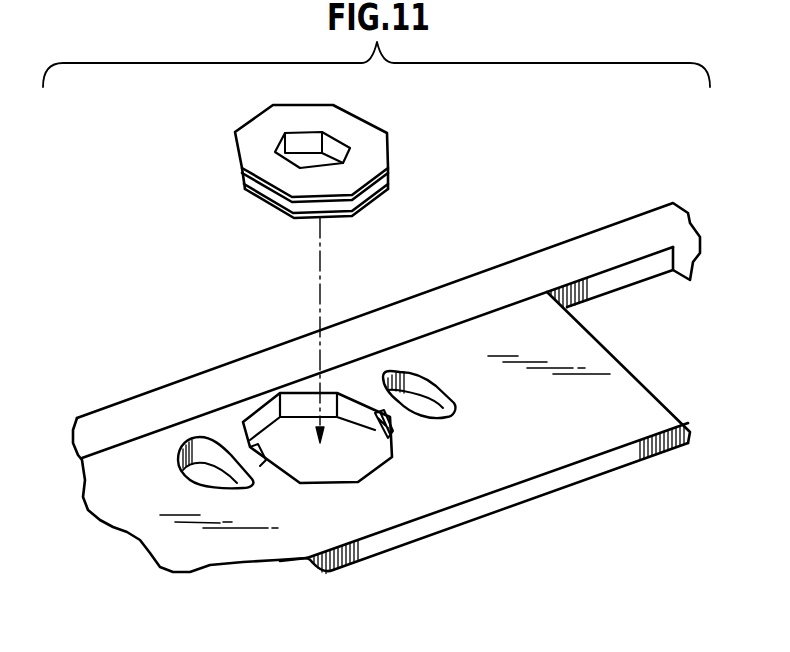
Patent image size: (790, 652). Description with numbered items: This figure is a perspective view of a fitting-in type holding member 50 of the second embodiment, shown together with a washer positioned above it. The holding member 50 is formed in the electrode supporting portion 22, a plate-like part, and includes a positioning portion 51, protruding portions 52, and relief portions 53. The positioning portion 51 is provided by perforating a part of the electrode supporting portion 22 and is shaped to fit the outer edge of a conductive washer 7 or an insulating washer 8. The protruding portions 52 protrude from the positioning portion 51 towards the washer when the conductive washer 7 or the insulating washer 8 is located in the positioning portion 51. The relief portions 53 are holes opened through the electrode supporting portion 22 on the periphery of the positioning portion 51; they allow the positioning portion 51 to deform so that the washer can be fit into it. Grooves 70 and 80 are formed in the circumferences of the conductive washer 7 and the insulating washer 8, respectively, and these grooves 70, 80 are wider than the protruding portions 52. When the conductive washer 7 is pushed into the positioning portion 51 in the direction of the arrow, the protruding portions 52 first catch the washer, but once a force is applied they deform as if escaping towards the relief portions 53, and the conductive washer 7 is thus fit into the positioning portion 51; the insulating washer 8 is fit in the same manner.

The conductive washer 7 is at (379, 274).
The insulating washer 8 is at (379, 274).
The groove 70 is at (379, 274).
The groove 80 is at (367, 142).
The electrode supporting portion 22 is at (132, 467).
The holding member 50 is at (349, 344).
The positioning portion 51 is at (318, 385).
The protruding portions 52 is at (375, 413).
The relief portions 53 is at (424, 383).